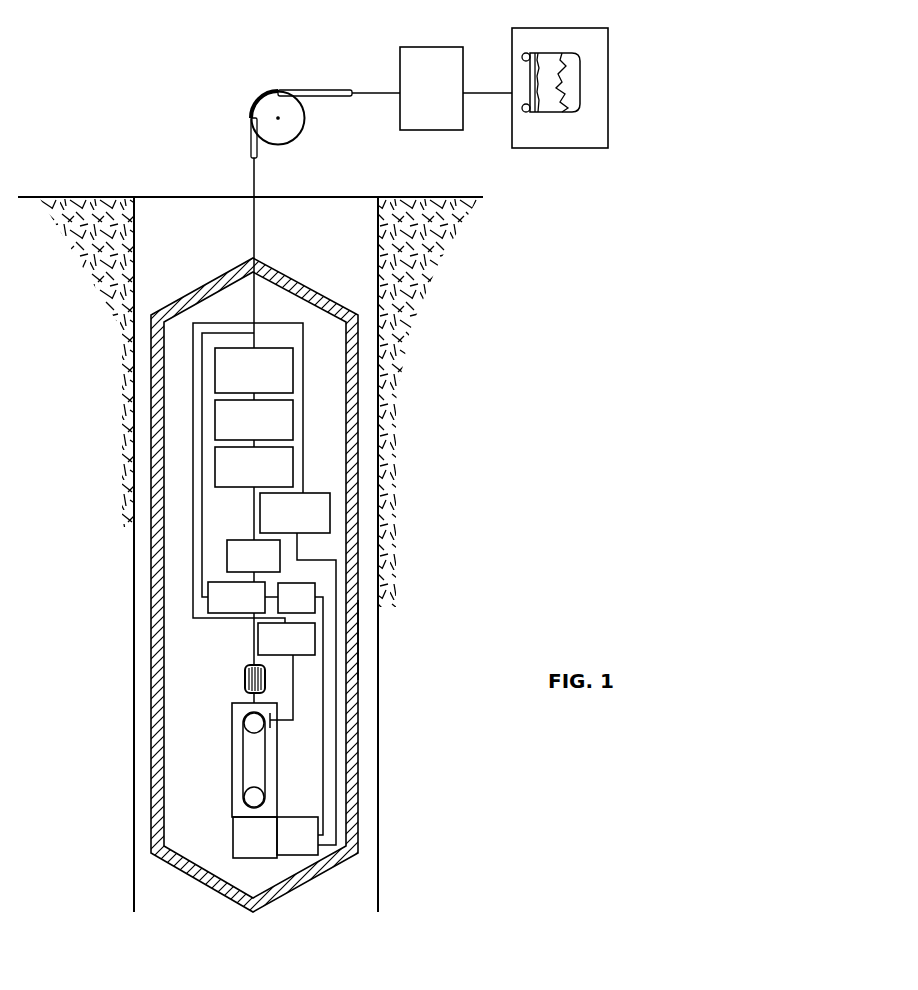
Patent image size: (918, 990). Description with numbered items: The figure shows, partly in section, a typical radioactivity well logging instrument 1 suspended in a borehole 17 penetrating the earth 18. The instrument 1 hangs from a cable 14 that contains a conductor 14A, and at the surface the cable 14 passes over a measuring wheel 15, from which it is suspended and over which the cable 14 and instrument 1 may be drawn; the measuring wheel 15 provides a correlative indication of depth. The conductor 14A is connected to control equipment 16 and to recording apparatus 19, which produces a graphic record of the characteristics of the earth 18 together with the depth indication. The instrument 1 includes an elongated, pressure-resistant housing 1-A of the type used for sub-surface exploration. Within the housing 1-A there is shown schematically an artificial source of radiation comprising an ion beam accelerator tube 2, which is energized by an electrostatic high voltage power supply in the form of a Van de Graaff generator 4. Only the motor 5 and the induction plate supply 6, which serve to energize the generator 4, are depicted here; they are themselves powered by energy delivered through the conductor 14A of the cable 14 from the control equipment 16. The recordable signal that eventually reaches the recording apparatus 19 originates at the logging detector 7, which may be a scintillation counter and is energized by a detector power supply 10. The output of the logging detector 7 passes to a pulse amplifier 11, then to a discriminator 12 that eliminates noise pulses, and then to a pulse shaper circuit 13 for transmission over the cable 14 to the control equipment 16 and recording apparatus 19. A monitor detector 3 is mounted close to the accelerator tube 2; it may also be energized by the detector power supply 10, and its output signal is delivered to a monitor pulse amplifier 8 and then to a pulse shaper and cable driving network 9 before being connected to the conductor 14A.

The well logging instrument 1 is at (363, 690).
The housing 1-A is at (357, 637).
The ion beam accelerator tube 2 is at (233, 832).
The monitor detector 3 is at (287, 817).
The Van de Graaff generator 4 is at (232, 722).
The motor 5 is at (247, 665).
The induction plate supply 6 is at (298, 655).
The logging detector 7 is at (245, 540).
The monitor pulse amplifier 8 is at (288, 583).
The pulse shaper and cable driving network 9 is at (219, 582).
The detector power supply 10 is at (304, 493).
The pulse amplifier 11 is at (293, 457).
The discriminator 12 is at (293, 408).
The pulse shaper circuit 13 is at (258, 348).
The cable 14 is at (250, 155).
The conductor 14A is at (255, 222).
The measuring wheel 15 is at (304, 113).
The control equipment 16 is at (449, 47).
The borehole 17 is at (372, 212).
The earth 18 is at (446, 306).
The recording apparatus 19 is at (590, 28).